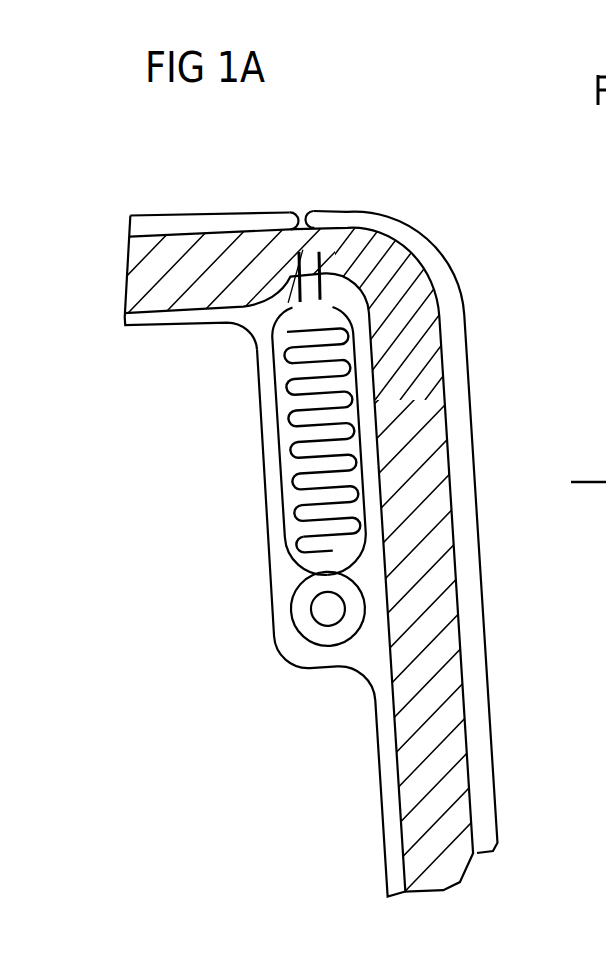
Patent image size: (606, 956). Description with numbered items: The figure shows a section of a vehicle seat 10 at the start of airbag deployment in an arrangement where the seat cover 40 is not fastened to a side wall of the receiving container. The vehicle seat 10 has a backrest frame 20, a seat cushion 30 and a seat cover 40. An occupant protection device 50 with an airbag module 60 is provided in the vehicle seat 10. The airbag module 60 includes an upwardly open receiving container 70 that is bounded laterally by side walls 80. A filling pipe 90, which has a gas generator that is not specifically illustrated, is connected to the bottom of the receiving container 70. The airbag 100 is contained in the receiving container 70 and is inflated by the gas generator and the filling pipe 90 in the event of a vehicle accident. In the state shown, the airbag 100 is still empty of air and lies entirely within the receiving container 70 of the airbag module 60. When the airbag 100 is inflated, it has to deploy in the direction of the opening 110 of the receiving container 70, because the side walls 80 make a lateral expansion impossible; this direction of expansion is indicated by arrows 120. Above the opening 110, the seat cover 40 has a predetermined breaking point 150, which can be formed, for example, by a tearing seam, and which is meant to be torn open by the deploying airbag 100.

The vehicle seat 10 is at (307, 835).
The backrest frame 20 is at (340, 710).
The seat cushion 30 is at (437, 728).
The seat cover 40 is at (487, 643).
The occupant protection device 50 is at (265, 683).
The airbag module 60 is at (290, 553).
The receiving container 70 is at (273, 332).
The side walls 80 is at (353, 417).
The filling pipe 90 is at (292, 628).
The airbag 100 is at (305, 405).
The opening 110 is at (297, 303).
The arrows 120 is at (323, 302).
The predetermined breaking point 150 is at (301, 205).